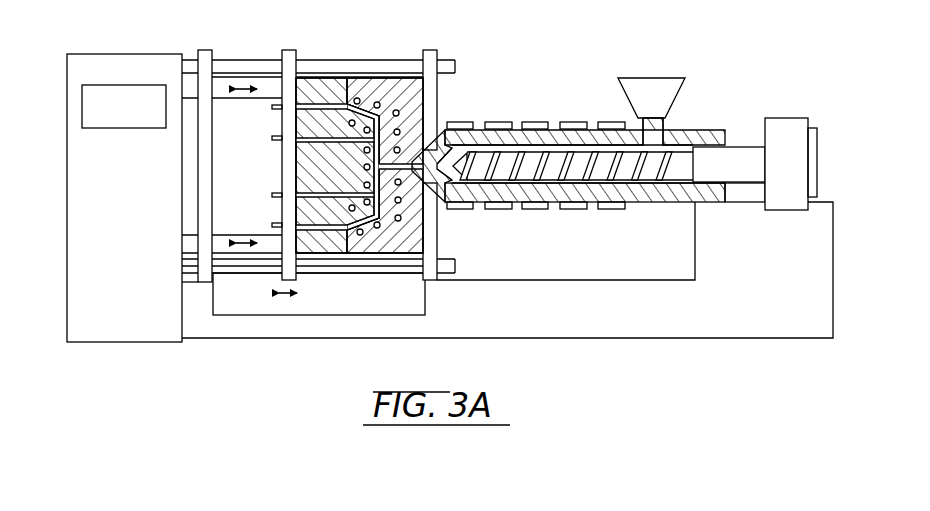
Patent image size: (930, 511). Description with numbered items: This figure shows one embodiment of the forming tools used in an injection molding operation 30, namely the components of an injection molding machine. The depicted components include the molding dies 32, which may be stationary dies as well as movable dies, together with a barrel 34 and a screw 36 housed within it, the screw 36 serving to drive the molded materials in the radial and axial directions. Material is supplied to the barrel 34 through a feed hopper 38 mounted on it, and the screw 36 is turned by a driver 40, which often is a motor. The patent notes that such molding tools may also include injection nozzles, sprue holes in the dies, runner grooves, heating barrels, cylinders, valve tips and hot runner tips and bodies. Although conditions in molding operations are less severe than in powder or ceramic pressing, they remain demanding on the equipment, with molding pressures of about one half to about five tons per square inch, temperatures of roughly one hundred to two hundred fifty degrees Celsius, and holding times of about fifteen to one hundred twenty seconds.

The injection molding operation 30 is at (536, 58).
The molding dies 32 is at (358, 45).
The barrel 34 is at (553, 132).
The screw 36 is at (647, 173).
The feed hopper 38 is at (665, 78).
The driver 40 is at (790, 122).